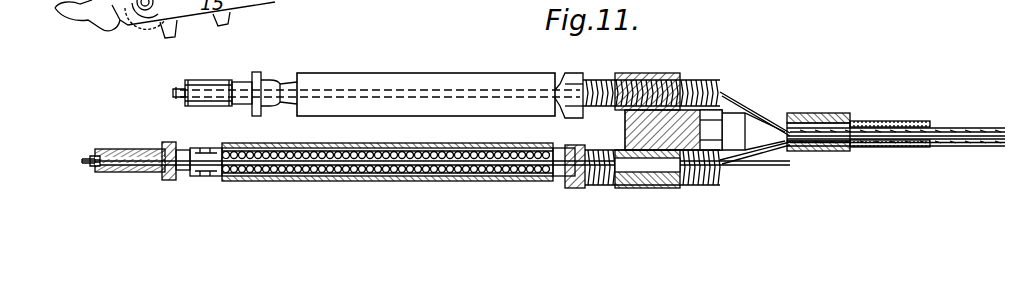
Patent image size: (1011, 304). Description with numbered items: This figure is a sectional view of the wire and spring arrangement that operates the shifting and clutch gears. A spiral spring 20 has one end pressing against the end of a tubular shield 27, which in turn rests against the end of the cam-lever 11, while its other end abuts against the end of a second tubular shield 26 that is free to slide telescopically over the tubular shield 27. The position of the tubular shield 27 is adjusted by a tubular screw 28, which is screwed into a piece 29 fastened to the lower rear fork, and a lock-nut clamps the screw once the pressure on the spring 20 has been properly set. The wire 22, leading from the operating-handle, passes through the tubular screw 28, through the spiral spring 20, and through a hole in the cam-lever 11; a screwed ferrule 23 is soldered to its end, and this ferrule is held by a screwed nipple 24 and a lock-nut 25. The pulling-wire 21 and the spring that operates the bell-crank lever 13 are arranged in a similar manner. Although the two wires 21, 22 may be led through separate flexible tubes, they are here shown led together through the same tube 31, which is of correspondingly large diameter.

The cam-lever 11 is at (167, 145).
The bell-crank lever 13 is at (257, 74).
The spiral spring 20 is at (405, 172).
The pulling-wire 21 is at (978, 128).
The wire 22 is at (465, 166).
The screwed ferrule 23 is at (90, 163).
The screwed nipple 24 is at (139, 172).
The lock-nut 25 is at (103, 166).
The tubular shield 26 is at (340, 181).
The tubular shield 27 is at (210, 178).
The tubular screw 28 is at (606, 186).
The piece 29 is at (680, 188).
The tube 31 is at (900, 122).